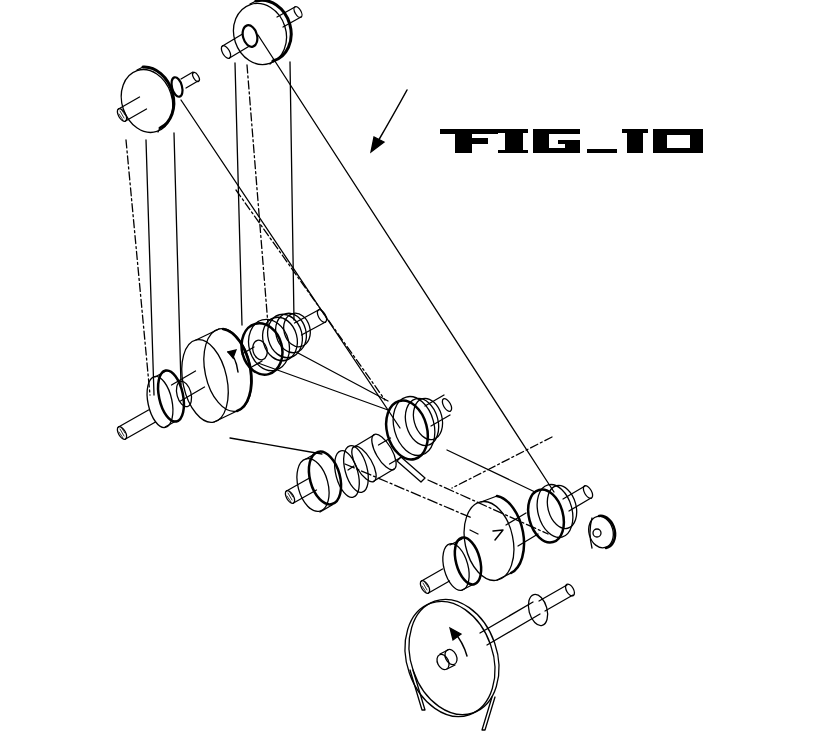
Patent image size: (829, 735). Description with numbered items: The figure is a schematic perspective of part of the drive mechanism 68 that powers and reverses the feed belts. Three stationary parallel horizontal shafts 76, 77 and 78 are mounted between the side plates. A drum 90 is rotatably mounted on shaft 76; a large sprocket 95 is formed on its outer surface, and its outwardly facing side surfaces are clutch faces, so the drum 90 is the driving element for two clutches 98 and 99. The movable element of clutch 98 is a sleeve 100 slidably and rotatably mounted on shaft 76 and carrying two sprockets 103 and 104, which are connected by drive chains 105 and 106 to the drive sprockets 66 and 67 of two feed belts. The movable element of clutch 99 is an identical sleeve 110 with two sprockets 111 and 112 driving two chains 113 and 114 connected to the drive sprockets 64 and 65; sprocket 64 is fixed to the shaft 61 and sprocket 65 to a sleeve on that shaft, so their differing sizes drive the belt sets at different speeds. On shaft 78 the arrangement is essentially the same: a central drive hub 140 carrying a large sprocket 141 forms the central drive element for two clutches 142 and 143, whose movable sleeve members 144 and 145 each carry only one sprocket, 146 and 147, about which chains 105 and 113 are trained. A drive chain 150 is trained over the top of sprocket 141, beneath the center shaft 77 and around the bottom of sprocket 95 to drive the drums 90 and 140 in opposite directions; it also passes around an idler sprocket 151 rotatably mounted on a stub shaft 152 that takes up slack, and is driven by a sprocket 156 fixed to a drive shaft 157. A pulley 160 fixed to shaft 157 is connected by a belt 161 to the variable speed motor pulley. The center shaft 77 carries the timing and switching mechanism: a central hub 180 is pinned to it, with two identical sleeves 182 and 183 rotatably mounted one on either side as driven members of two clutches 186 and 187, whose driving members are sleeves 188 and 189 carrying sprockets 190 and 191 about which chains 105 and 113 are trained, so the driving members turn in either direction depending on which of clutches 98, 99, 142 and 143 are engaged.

The shaft 61 is at (117, 116).
The drive sprocket 64 is at (182, 96).
The drive sprocket 65 is at (125, 90).
The sprocket 66 is at (240, 38).
The sprocket 67 is at (284, 44).
The drive mechanism 68 is at (393, 110).
The shaft 76 is at (117, 433).
The shaft 77 is at (285, 501).
The shaft 78 is at (420, 594).
The drum 90 is at (252, 428).
The large sprocket 95 is at (240, 418).
The clutch 98 is at (243, 337).
The clutch 99 is at (207, 420).
The sleeve 100 is at (302, 330).
The sprocket 103 is at (300, 366).
The sprocket 104 is at (305, 345).
The drive chain 105 is at (232, 88).
The drive chain 106 is at (262, 180).
The sleeve 110 is at (160, 404).
The sprocket 111 is at (187, 422).
The sprocket 112 is at (152, 396).
The chain 113 is at (150, 190).
The chain 114 is at (172, 240).
The central drive hub 140 is at (512, 583).
The large sprocket 141 is at (530, 560).
The clutch 142 is at (540, 506).
The clutch 143 is at (479, 530).
The movable sleeve member 144 is at (572, 542).
The movable sleeve member 145 is at (446, 580).
The sprocket 146 is at (566, 535).
The sprocket 147 is at (456, 556).
The drive chain 150 is at (305, 398).
The idler sprocket 151 is at (598, 545).
The stub shaft 152 is at (600, 531).
The sprocket 156 is at (538, 626).
The drive shaft 157 is at (505, 636).
The pulley 160 is at (408, 638).
The belt 161 is at (492, 716).
The central hub 180 is at (364, 440).
The sleeve 182 is at (388, 468).
The sleeve 183 is at (345, 449).
The clutch 186 is at (426, 446).
The clutch 187 is at (348, 485).
The sleeve 188 is at (414, 418).
The sleeve 189 is at (312, 508).
The sprocket 190 is at (399, 410).
The sprocket 191 is at (308, 466).